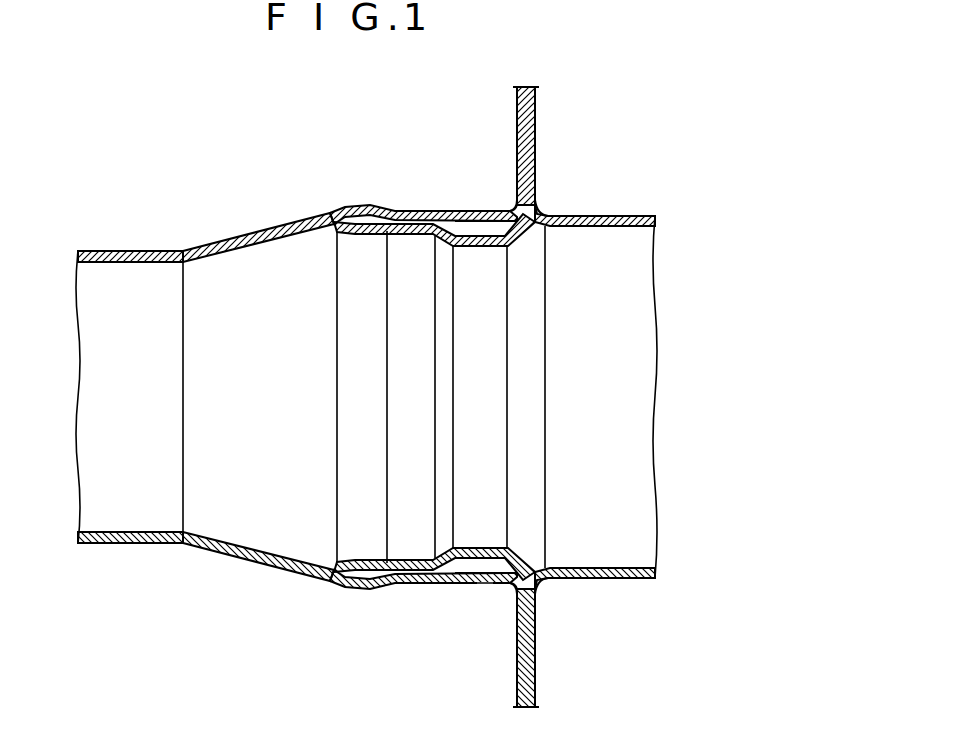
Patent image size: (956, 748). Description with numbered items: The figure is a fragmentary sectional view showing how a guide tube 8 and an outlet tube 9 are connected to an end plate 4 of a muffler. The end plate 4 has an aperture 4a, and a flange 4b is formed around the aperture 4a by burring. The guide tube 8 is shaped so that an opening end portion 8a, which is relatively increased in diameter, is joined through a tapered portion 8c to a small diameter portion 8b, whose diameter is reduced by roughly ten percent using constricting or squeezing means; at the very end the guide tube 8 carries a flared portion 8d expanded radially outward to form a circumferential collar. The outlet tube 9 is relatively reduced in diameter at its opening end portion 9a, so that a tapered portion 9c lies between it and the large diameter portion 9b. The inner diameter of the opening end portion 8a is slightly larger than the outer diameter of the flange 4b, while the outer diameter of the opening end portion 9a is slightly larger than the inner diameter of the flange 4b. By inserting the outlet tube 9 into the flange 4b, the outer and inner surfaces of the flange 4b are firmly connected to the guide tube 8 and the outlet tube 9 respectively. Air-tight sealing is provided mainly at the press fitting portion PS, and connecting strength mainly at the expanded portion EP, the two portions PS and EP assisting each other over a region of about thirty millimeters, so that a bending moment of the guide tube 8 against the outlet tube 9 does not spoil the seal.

The end plate 4 is at (489, 390).
The aperture 4a is at (530, 218).
The flange 4b is at (473, 228).
The guide tube 8 is at (296, 353).
The opening end portion 8a is at (470, 210).
The small diameter portion 8b is at (150, 248).
The tapered portion 8c is at (262, 222).
The flared portion 8d is at (488, 210).
The outlet tube 9 is at (508, 419).
The opening end portion 9a is at (368, 565).
The large diameter portion 9b is at (612, 572).
The tapered portion 9c is at (538, 252).
The expanded portion EP is at (393, 594).
The press fitting portion PS is at (485, 587).